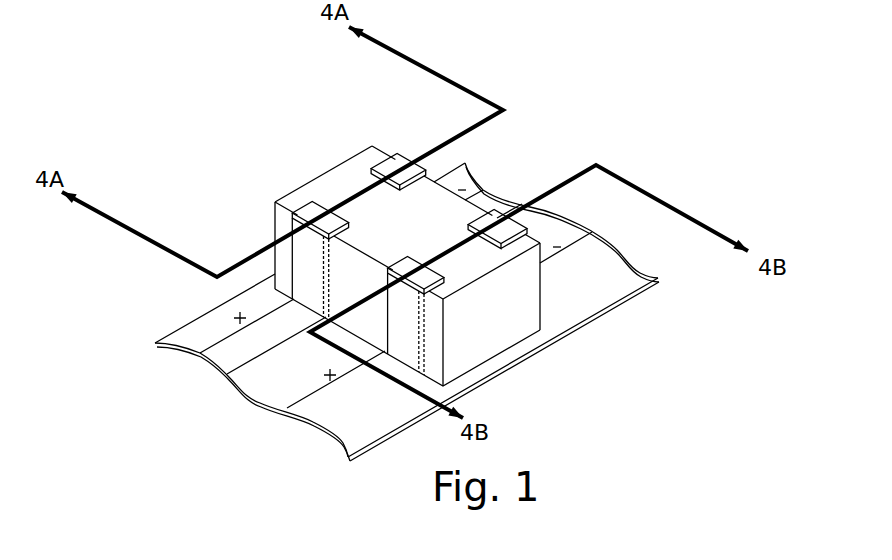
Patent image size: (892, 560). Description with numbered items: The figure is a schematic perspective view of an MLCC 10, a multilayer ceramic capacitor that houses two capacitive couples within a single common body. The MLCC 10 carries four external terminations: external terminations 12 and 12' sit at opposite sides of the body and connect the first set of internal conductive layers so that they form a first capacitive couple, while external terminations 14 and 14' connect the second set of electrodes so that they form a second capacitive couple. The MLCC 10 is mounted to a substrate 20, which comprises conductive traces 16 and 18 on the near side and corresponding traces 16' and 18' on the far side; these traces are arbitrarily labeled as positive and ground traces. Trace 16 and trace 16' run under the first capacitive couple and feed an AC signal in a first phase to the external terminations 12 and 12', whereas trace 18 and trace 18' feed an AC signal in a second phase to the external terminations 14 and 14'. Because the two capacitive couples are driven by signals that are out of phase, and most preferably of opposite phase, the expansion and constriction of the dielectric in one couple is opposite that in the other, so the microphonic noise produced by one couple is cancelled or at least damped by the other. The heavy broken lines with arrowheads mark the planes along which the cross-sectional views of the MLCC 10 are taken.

The MLCC 10 is at (347, 185).
The external termination 12 is at (275, 227).
The external termination 14 is at (478, 336).
The external termination 12' is at (398, 130).
The external termination 14' is at (546, 218).
The trace 16 is at (224, 356).
The trace 18 is at (306, 403).
The trace 16' is at (493, 150).
The trace 18' is at (586, 233).
The substrate 20 is at (553, 320).